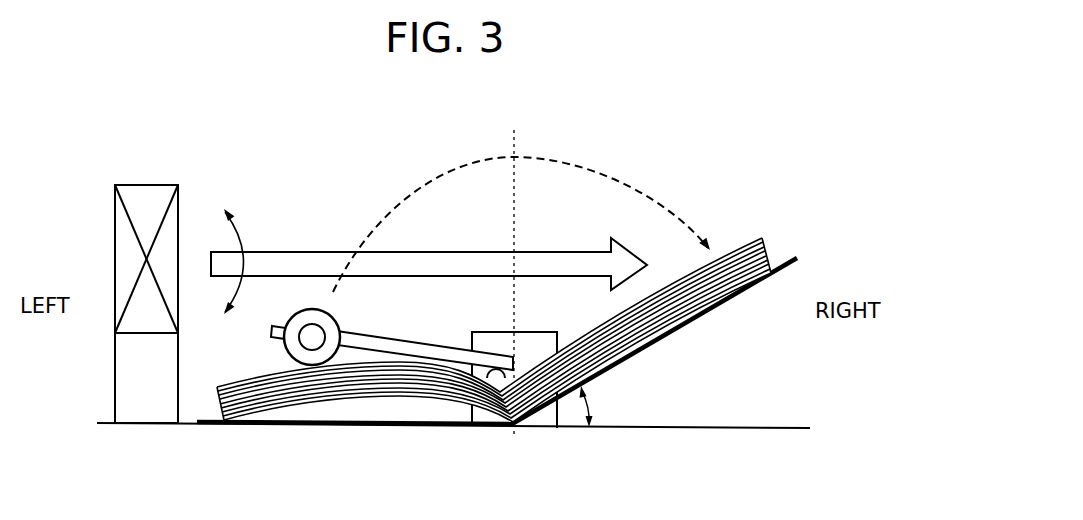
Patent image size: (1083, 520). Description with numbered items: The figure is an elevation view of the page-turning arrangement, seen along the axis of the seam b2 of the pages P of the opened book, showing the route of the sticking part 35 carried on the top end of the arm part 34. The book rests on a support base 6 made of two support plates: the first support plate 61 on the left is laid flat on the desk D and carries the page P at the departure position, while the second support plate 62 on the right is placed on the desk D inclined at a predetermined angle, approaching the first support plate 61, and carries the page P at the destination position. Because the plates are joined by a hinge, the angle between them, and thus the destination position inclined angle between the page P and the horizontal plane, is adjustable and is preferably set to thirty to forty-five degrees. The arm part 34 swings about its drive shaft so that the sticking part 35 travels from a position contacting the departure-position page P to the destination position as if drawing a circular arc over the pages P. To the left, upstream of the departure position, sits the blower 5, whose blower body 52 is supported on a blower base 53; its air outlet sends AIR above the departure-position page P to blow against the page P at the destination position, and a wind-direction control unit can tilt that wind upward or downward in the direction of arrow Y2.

The blower 5 is at (116, 255).
The blower body 52 is at (123, 262).
The blower base 53 is at (123, 384).
The arm part 34 is at (422, 345).
The sticking part 35 is at (335, 318).
The seam b2 is at (490, 385).
The support base 6 is at (497, 370).
The first support plate 61 is at (345, 426).
The second support plate 62 is at (677, 330).
The page P is at (239, 382).
The desk D is at (700, 428).
The arrow Y2 is at (240, 236).
The air AIR is at (429, 264).